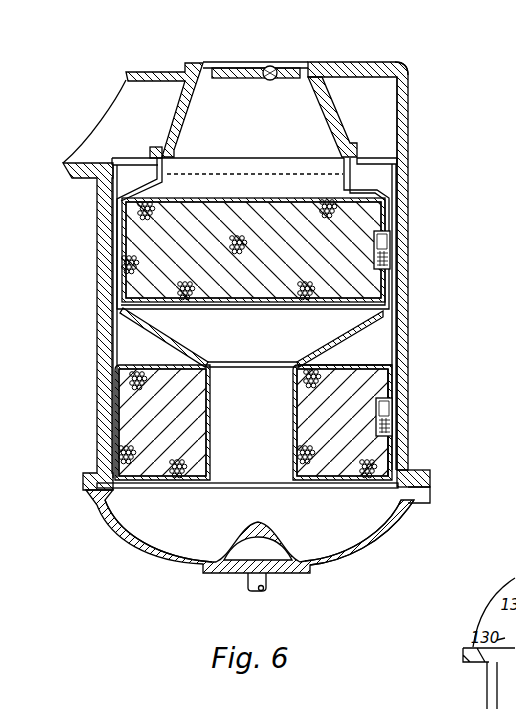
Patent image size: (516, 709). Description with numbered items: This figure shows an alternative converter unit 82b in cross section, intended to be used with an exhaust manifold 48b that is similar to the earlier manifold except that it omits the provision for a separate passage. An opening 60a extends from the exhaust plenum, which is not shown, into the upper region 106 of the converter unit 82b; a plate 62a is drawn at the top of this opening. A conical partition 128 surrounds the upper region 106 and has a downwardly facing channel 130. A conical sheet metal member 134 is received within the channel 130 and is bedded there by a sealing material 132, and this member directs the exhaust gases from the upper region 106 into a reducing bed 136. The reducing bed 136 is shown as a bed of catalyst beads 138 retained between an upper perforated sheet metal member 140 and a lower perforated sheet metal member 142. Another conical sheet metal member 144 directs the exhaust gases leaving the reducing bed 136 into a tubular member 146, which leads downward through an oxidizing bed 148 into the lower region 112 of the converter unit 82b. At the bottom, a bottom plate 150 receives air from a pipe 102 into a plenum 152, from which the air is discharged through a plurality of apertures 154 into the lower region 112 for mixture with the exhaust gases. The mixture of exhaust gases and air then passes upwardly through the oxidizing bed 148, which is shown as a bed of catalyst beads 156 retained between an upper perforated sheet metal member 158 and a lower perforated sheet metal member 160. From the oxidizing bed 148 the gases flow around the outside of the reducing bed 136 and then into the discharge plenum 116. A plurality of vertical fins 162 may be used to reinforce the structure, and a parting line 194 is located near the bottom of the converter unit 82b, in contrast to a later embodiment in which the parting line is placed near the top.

The discharge plenum 116 is at (128, 86).
The exhaust manifold 48b is at (410, 68).
The opening 60a is at (212, 68).
The mounting plate with fastener 62a is at (242, 64).
The upper region 106 is at (293, 101).
The conical partition 128 is at (178, 116).
The sealing material 132 is at (170, 151).
The downwardly facing channel 130 is at (152, 155).
The conical sheet metal member 134 is at (372, 188).
The reducing bed 136 is at (389, 221).
The converter unit 82b is at (410, 252).
The upper perforated sheet metal member 140 is at (212, 190).
The catalyst beads 138 is at (374, 281).
The lower perforated sheet metal member 142 is at (194, 318).
The conical sheet metal member 144 is at (330, 337).
The vertical fins 162 is at (122, 334).
The tubular member 146 is at (293, 428).
The upper perforated sheet metal member 158 is at (356, 360).
The catalyst beads 156 is at (383, 382).
The oxidizing bed 148 is at (400, 438).
The lower perforated sheet metal member 160 is at (192, 481).
The parting line 194 is at (400, 489).
The lower region 112 is at (373, 517).
The bottom plate 150 is at (377, 550).
The apertures 154 is at (238, 531).
The plenum 152 is at (272, 553).
The pipe 102 is at (250, 580).